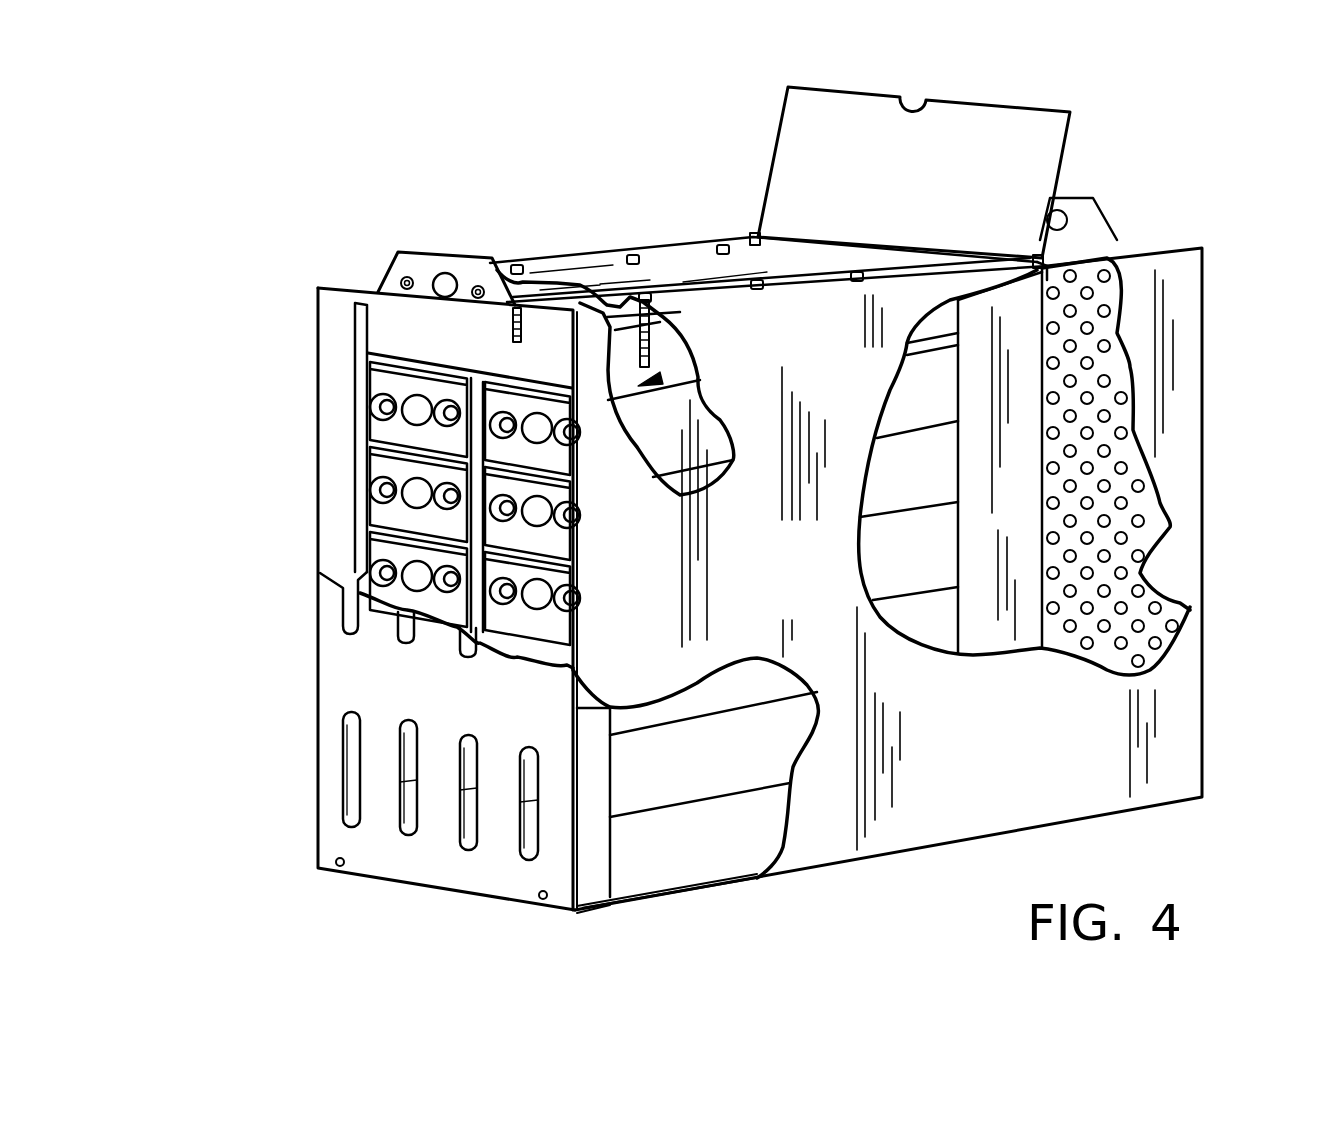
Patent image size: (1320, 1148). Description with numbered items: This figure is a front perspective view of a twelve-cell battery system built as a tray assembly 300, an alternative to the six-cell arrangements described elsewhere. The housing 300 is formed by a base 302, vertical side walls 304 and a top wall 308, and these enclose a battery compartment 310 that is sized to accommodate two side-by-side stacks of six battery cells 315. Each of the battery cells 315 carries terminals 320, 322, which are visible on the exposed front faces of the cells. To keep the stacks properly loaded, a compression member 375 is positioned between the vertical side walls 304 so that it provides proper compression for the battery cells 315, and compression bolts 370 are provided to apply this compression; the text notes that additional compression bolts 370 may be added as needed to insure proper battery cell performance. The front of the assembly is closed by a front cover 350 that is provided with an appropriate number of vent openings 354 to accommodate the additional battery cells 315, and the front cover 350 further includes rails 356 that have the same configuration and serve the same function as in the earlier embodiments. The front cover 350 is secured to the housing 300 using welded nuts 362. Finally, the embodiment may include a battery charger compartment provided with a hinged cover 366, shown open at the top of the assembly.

The tray assembly 300 is at (540, 162).
The base 302 is at (828, 868).
The vertical side walls 304 is at (1172, 744).
The top wall 308 is at (668, 262).
The battery compartment 310 is at (393, 320).
The battery cells 315 is at (948, 415).
The terminals 320 is at (372, 405).
The terminals 322 is at (372, 490).
The front cover 350 is at (332, 740).
The vent openings 354 is at (522, 745).
The rails 356 is at (620, 900).
The welded nuts 362 is at (393, 268).
The hinged cover 366 is at (795, 126).
The compression bolts 370 is at (640, 340).
The compression member 375 is at (655, 380).